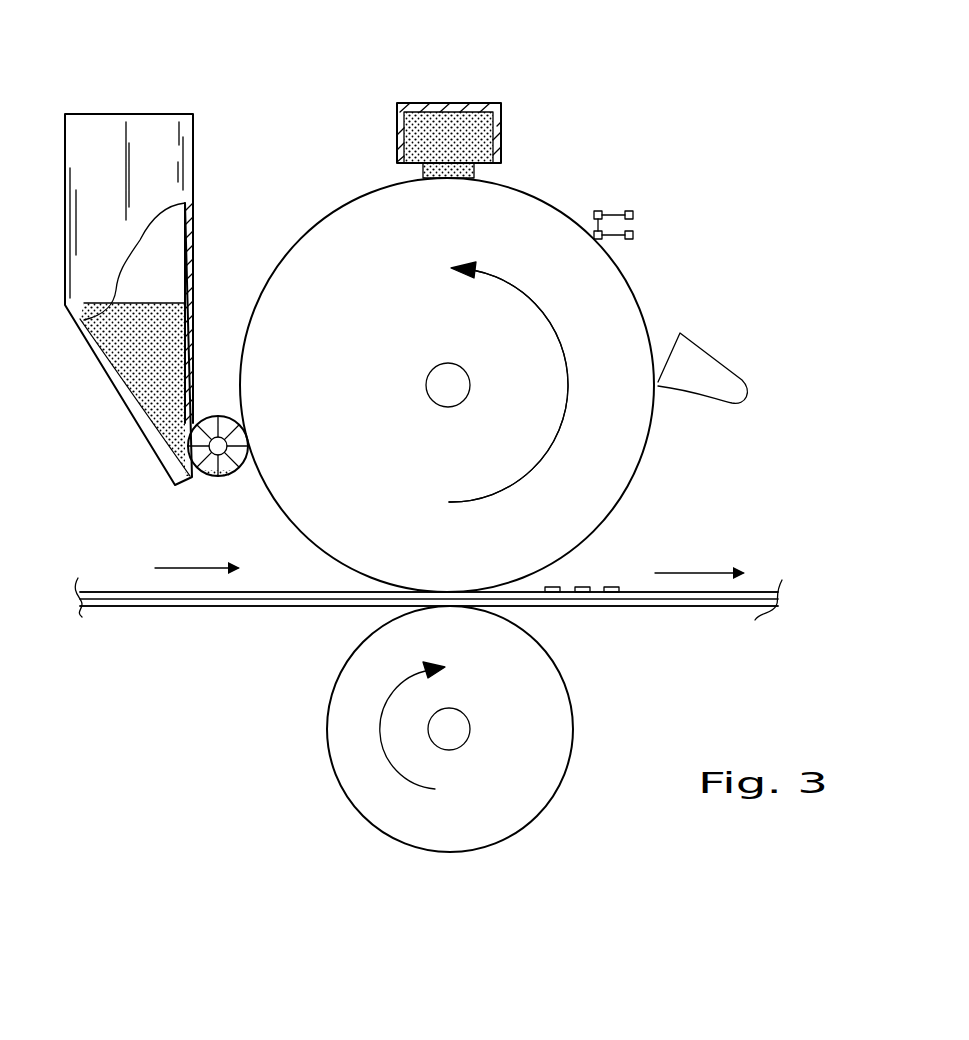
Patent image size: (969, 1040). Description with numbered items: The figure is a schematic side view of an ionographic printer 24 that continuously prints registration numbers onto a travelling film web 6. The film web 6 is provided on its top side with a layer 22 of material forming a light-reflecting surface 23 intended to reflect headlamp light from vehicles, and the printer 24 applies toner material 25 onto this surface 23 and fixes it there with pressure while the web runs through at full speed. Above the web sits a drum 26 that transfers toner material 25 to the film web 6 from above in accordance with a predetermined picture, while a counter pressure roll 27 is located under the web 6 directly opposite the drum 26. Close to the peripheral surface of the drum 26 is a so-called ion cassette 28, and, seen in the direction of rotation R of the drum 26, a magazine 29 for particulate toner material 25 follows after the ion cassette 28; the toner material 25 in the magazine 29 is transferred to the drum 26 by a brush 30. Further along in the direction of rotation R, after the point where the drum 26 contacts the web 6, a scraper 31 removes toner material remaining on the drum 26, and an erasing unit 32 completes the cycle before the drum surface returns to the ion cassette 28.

The film web 6 is at (106, 565).
The layer 22 is at (127, 592).
The light-reflecting surface 23 is at (222, 592).
The ionographic printer 24 is at (596, 121).
The toner material 25 is at (143, 365).
The drum 26 is at (622, 293).
The counter pressure roll 27 is at (518, 793).
The ion cassette 28 is at (455, 103).
The magazine 29 is at (130, 114).
The brush 30 is at (220, 477).
The scraper 31 is at (710, 368).
The erasing unit 32 is at (633, 212).
The direction of rotation R is at (553, 440).